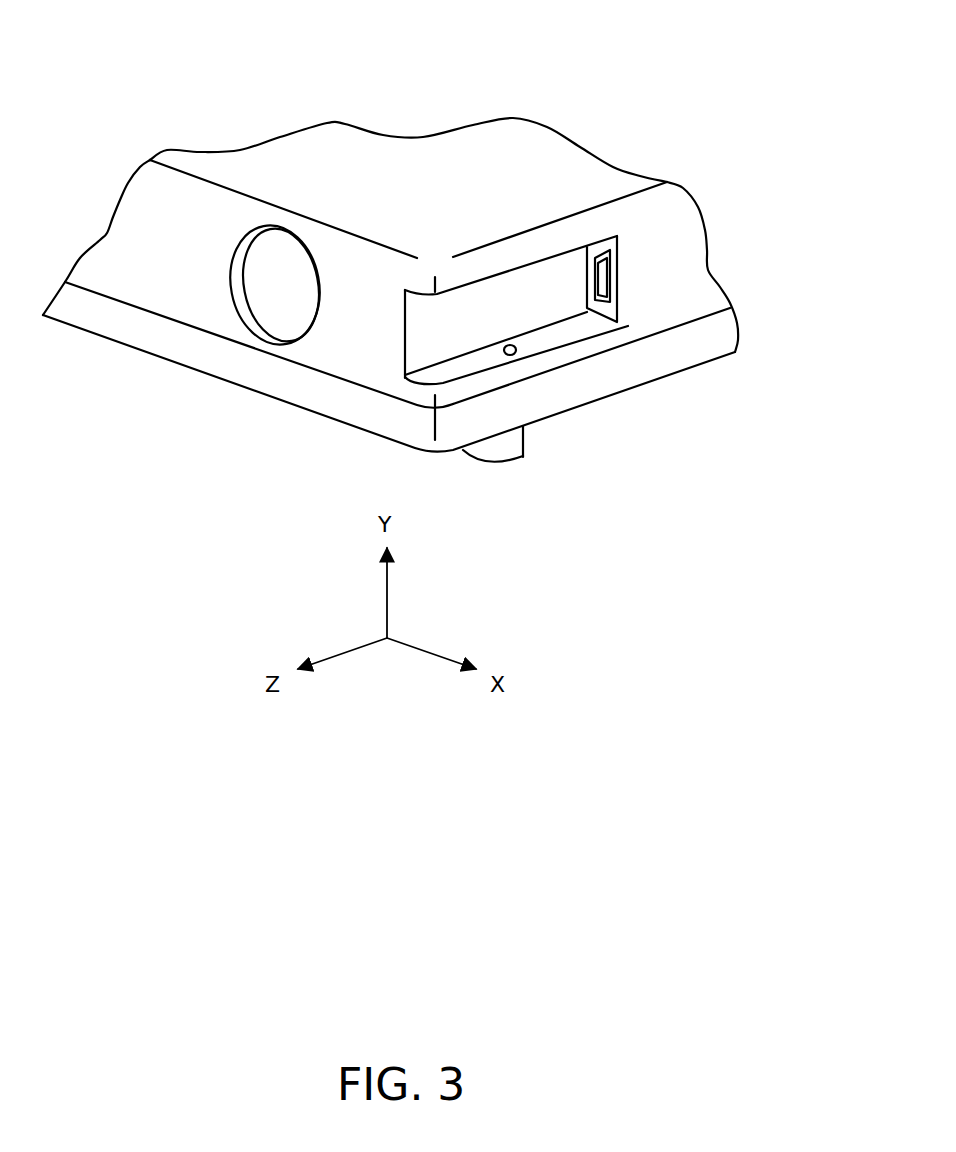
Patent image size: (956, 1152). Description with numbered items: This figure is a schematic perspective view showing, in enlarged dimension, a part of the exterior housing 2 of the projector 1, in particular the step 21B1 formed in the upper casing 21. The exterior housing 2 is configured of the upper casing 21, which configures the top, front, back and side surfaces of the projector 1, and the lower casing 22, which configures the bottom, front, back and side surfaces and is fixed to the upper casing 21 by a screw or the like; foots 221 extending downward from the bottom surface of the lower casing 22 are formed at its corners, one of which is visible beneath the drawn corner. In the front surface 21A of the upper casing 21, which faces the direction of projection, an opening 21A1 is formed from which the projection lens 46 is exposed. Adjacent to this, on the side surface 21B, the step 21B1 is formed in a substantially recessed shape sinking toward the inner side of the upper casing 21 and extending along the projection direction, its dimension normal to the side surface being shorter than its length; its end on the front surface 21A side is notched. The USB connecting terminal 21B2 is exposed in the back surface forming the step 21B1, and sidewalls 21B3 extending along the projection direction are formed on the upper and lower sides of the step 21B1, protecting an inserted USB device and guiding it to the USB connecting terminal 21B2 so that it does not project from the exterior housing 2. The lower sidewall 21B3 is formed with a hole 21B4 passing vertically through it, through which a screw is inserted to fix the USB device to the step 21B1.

The projector 1 is at (622, 86).
The exterior housing 2 is at (828, 292).
The upper casing 21 is at (717, 298).
The lower casing 22 is at (715, 337).
The front surface 21A is at (147, 232).
The opening 21A1 is at (247, 320).
The projection lens 46 is at (288, 264).
The front surface of upper case 21B is at (678, 203).
The step 21B1 is at (435, 333).
The USB connecting terminal 21B2 is at (603, 283).
The sidewalls 21B3 is at (508, 257).
The hole 21B4 is at (512, 345).
The foots 221 is at (505, 447).